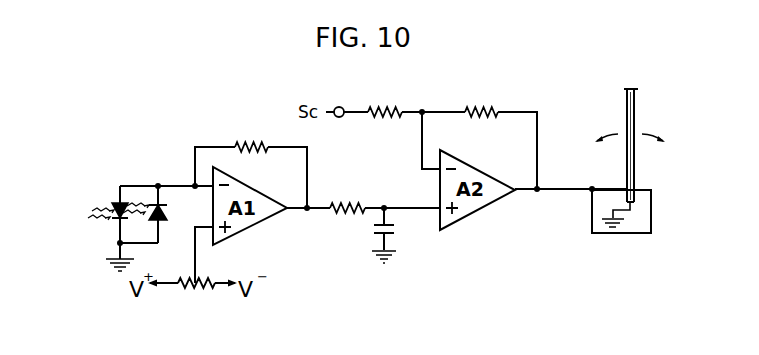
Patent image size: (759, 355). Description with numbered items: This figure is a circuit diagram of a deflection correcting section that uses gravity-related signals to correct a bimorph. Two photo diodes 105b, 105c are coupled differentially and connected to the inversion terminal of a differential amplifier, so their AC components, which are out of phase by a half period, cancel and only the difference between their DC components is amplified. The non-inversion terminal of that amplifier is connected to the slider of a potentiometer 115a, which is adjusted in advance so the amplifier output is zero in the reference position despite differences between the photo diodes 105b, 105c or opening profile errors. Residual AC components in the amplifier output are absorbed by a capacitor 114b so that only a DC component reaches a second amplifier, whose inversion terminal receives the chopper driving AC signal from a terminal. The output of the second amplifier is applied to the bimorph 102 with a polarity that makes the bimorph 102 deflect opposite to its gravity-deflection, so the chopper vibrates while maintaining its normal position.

The photo diode 105b is at (112, 222).
The photo diode 105c is at (162, 222).
The potentiometer 115a is at (197, 288).
The capacitor 114b is at (396, 228).
The bimorph 102 is at (637, 167).